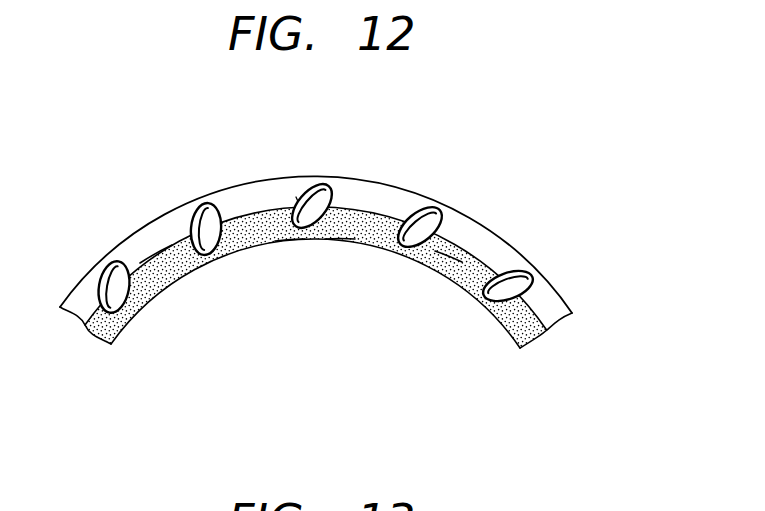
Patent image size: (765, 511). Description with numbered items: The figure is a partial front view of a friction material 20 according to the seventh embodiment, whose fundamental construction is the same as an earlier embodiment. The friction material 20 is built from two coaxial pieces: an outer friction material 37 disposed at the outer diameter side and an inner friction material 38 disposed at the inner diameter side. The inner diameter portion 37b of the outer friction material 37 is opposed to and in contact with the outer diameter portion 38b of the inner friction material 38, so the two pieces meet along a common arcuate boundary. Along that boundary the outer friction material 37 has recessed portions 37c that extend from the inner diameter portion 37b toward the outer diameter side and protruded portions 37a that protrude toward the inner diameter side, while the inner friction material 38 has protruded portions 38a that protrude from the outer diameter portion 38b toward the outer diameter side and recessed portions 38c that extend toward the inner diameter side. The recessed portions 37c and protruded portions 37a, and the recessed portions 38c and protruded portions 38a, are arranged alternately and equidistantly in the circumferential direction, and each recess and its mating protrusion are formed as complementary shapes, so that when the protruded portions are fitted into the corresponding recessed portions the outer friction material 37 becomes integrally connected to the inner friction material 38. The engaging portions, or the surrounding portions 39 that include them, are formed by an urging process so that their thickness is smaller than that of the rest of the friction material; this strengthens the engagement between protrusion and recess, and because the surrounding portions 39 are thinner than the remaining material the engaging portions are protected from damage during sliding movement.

The friction material 20 is at (568, 216).
The outer friction material 37 is at (502, 257).
The protruded portion 37a is at (340, 237).
The inner diameter portion 37b is at (448, 256).
The recessed portion 37c is at (298, 200).
The inner friction material 38 is at (470, 293).
The protruded portion 38a is at (330, 193).
The outer diameter portion 38b is at (156, 253).
The recessed portion 38c is at (292, 238).
The surrounding portion 39 is at (106, 270).